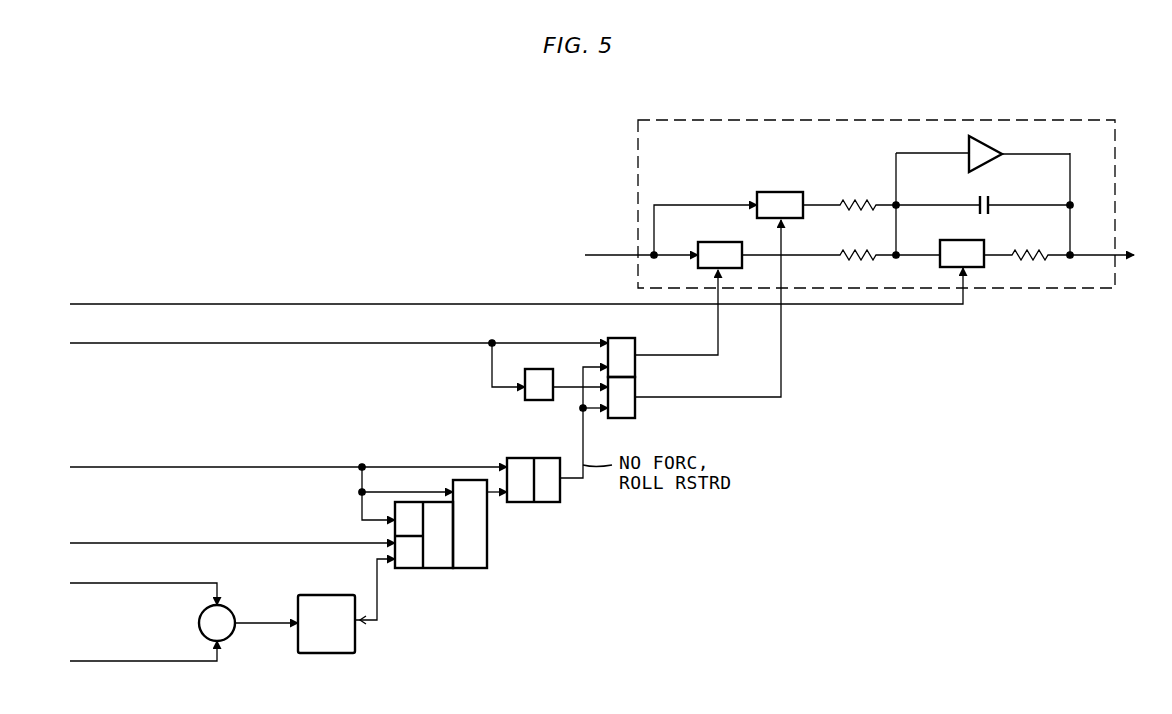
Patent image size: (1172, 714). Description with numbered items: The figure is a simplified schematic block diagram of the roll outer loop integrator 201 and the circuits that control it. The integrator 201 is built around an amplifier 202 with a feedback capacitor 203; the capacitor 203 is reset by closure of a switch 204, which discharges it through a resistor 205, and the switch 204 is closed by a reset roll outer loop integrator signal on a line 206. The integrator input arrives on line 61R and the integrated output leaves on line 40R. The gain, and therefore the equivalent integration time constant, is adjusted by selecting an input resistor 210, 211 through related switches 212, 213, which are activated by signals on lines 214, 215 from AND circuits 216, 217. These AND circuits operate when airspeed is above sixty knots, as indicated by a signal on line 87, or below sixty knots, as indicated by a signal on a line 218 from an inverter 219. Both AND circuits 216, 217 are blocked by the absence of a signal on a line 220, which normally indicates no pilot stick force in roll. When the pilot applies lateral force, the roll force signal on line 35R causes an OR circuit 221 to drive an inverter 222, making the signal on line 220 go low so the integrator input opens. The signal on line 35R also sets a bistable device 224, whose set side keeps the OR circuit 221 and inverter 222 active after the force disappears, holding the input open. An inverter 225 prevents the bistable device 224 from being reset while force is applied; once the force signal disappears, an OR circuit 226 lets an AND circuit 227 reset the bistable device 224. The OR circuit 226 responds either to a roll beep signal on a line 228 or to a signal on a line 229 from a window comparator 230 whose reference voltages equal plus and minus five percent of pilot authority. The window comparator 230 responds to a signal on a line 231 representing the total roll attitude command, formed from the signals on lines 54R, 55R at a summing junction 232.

The roll outer loop integrator 201 is at (533, 168).
The amplifier 202 is at (992, 151).
The feedback capacitor 203 is at (988, 198).
The switch 204 is at (960, 240).
The resistor 205 is at (1032, 242).
The line 206 is at (268, 304).
The input resistor 210 is at (862, 200).
The input resistor 211 is at (862, 250).
The switch 212 is at (782, 192).
The switch 213 is at (712, 242).
The line 214 is at (781, 333).
The line 215 is at (718, 333).
The AND circuit 216 is at (612, 338).
The AND circuit 217 is at (613, 418).
The line 218 is at (565, 383).
The inverter 219 is at (529, 401).
The line 220 is at (583, 445).
The OR circuit 221 is at (513, 503).
The inverter 222 is at (551, 503).
The bistable device 224 is at (477, 568).
The inverter 225 is at (395, 533).
The OR circuit 226 is at (401, 569).
The AND circuit 227 is at (440, 569).
The line 228 is at (195, 543).
The line 229 is at (377, 612).
The window comparator 230 is at (310, 595).
The line 231 is at (272, 623).
The summing junction 232 is at (199, 616).
The line 61R is at (626, 256).
The line 40R is at (1118, 263).
The line 87 is at (262, 343).
The line 35R is at (198, 467).
The line 54R is at (193, 583).
The line 55R is at (195, 661).